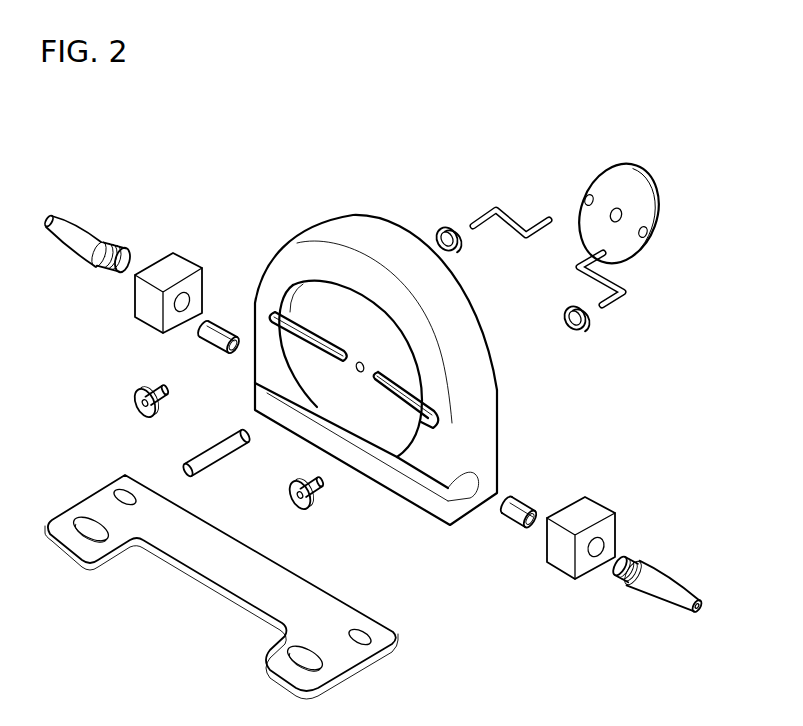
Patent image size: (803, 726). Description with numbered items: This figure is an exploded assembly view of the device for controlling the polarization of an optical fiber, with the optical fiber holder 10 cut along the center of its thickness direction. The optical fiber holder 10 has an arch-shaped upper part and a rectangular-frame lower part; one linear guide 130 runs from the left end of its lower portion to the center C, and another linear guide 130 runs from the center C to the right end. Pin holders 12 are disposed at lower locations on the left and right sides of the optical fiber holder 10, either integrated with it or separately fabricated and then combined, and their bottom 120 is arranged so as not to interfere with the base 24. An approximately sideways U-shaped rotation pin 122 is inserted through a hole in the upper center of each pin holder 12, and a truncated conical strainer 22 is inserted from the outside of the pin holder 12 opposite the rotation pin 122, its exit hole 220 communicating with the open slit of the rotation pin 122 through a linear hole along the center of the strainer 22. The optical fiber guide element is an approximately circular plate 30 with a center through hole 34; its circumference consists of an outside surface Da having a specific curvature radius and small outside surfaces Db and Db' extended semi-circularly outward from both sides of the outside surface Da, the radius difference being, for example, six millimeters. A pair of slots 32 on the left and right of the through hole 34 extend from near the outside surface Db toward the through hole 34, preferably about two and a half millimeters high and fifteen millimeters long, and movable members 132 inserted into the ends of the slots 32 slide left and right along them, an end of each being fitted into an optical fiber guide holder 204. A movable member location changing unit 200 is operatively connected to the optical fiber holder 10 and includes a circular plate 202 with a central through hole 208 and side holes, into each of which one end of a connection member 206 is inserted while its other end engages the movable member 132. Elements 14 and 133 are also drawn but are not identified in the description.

The optical fiber holder 10 is at (290, 171).
The pin holder 12 is at (187, 246).
The pin 14 is at (222, 464).
The truncated conical strainer 22 is at (100, 238).
The base 24 is at (400, 654).
The circular plate 30 is at (398, 354).
The slot 32 is at (288, 306).
The center through hole 34 is at (357, 369).
The bottom 120 is at (595, 553).
The rotation pin 122 is at (520, 505).
The linear guide 130 is at (266, 391).
The movable member 132 is at (128, 415).
The bolt head 133 is at (140, 396).
The movable member location changing unit 200 is at (631, 157).
The circular plate 202 is at (632, 212).
The optical fiber guide holder 204 is at (445, 228).
The connection member 206 is at (494, 209).
The through hole 208 is at (611, 209).
The exit hole 220 is at (47, 214).
The outside surface Da is at (290, 305).
The small outside surface Db is at (281, 325).
The small outside surface Db' is at (460, 400).
The center C is at (333, 428).